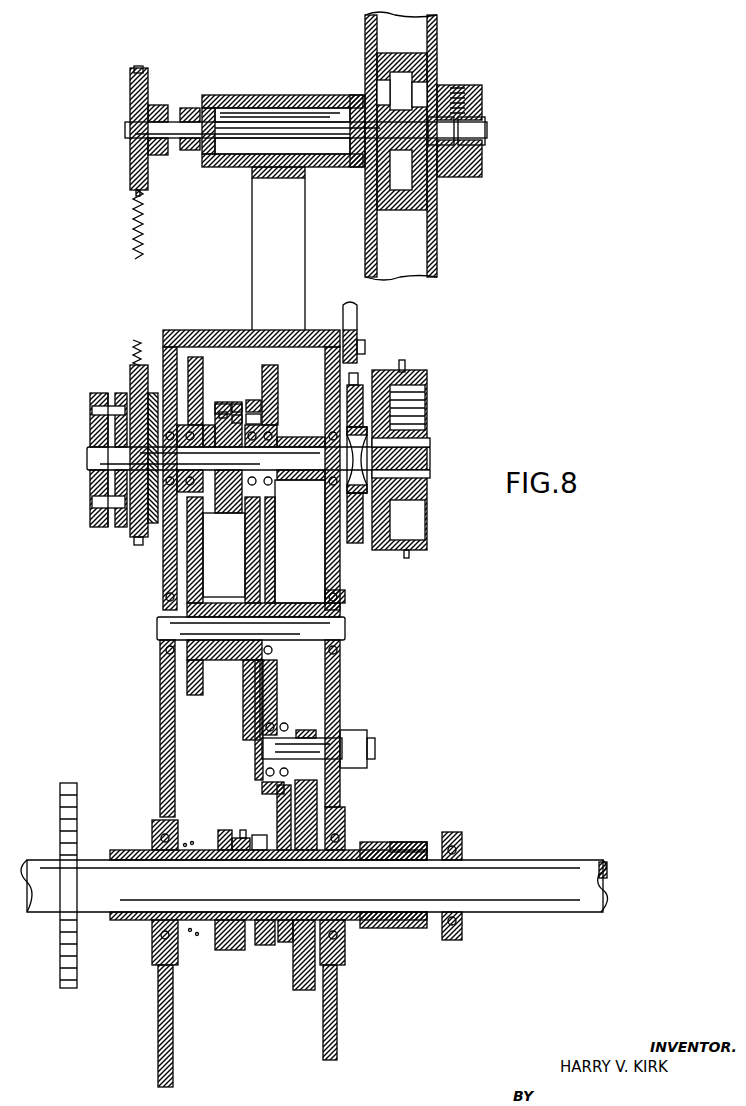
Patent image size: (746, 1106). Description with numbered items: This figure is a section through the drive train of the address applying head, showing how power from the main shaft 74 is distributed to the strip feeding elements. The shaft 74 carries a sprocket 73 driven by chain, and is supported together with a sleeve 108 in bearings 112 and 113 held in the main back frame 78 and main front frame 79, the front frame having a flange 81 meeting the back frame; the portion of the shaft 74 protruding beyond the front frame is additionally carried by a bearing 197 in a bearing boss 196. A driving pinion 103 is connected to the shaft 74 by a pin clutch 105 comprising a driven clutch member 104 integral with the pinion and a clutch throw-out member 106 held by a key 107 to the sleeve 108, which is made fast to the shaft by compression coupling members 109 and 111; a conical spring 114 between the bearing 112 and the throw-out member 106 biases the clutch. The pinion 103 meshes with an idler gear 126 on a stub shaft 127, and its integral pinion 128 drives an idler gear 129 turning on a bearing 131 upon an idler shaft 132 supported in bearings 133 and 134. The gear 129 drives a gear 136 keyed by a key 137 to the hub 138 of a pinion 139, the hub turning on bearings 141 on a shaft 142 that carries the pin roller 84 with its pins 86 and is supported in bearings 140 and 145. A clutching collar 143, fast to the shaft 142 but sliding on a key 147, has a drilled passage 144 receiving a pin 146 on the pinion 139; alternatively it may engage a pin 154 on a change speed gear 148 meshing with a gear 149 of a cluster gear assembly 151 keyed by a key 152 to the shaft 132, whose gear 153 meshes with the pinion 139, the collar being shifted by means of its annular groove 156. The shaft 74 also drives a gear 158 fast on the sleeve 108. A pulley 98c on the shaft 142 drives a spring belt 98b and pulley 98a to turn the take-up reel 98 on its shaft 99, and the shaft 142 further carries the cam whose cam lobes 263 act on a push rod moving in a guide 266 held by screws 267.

The sprocket 73 is at (77, 815).
The shaft 74 is at (605, 900).
The main back frame 78 is at (158, 1073).
The main front frame 79 is at (340, 1040).
The flange 81 is at (210, 338).
The pin roller 84 is at (428, 378).
The pins 86 is at (408, 372).
The take-up reel 98 is at (438, 72).
The pulley 98a is at (148, 85).
The spring belt 98b is at (137, 258).
The pulley 98c is at (132, 528).
The shaft 99 is at (268, 128).
The driving pinion 103 is at (288, 945).
The driven clutch member 104 is at (268, 948).
The pin clutch 105 is at (248, 963).
The clutch throw-out member 106 is at (222, 952).
The key 107 is at (207, 840).
The sleeve 108 is at (125, 850).
The compression coupling member 109 is at (380, 848).
The compression coupling member 111 is at (420, 845).
The bearing 112 is at (152, 838).
The bearing 113 is at (340, 825).
The conical spring 114 is at (185, 845).
The idler gear 126 is at (275, 812).
The stub shaft 127 is at (320, 745).
The pinion 128 is at (263, 783).
The idler gear 129 is at (262, 565).
The bearing 131 is at (270, 612).
The idler shaft 132 is at (345, 632).
The bearing 133 is at (166, 603).
The bearing 134 is at (343, 603).
The gear 136 is at (275, 405).
The key 137 is at (280, 425).
The hub 138 is at (278, 492).
The pinion 139 is at (270, 400).
The bearing 140 is at (368, 445).
The bearings 141 is at (285, 440).
The shaft 142 is at (292, 455).
The clutching collar 143 is at (222, 413).
The drilled passage 144 is at (236, 412).
The bearing 145 is at (160, 425).
The pin 146 is at (256, 420).
The key 147 is at (228, 490).
The change speed gear 148 is at (195, 370).
The gear 149 is at (187, 680).
The cluster gear assembly 151 is at (218, 612).
The key 152 is at (222, 650).
The gear 153 is at (245, 720).
The pin 154 is at (195, 425).
The annular groove 156 is at (224, 555).
The gear 158 is at (315, 975).
The bearing boss 196 is at (452, 832).
The bearing 197 is at (465, 855).
The cam lobes 263 is at (356, 378).
The guide 266 is at (358, 312).
The screws 267 is at (364, 348).